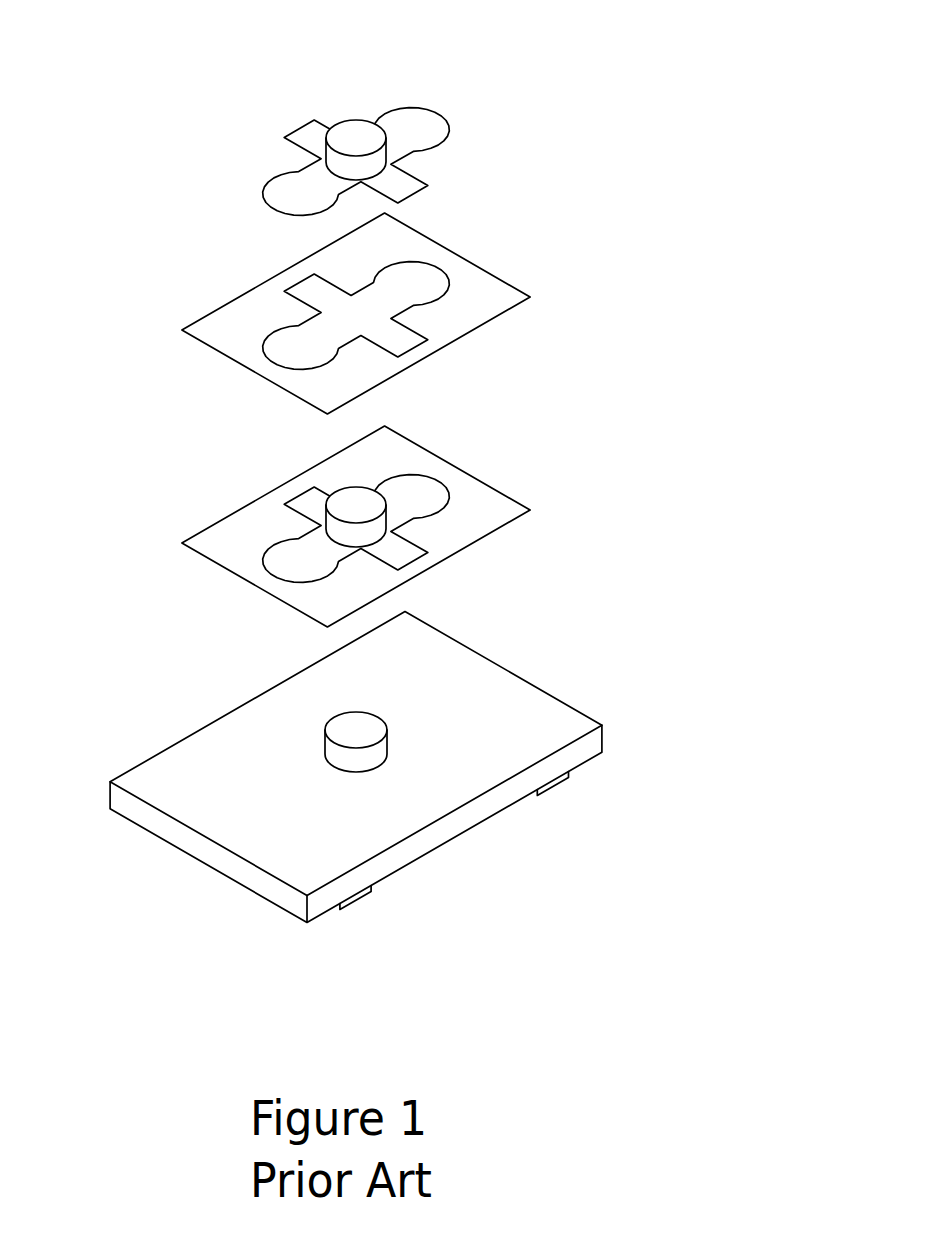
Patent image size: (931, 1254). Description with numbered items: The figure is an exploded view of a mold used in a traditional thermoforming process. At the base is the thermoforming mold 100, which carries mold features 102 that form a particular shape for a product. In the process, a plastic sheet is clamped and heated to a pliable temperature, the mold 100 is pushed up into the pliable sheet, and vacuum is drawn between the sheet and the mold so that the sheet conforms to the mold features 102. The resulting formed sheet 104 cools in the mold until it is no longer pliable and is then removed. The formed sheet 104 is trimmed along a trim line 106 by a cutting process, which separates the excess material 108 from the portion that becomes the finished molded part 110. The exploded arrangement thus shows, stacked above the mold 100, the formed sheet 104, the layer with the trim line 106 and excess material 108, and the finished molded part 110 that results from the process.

The thermoforming mold 100 is at (163, 843).
The mold features 102 is at (342, 718).
The formed sheet 104 is at (220, 517).
The trim line 106 is at (449, 496).
The excess material 108 is at (531, 296).
The finished molded part 110 is at (446, 121).